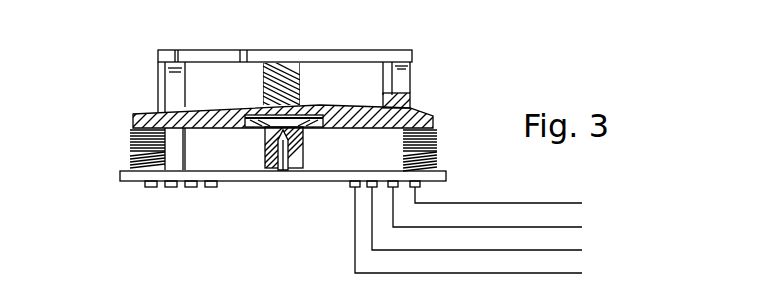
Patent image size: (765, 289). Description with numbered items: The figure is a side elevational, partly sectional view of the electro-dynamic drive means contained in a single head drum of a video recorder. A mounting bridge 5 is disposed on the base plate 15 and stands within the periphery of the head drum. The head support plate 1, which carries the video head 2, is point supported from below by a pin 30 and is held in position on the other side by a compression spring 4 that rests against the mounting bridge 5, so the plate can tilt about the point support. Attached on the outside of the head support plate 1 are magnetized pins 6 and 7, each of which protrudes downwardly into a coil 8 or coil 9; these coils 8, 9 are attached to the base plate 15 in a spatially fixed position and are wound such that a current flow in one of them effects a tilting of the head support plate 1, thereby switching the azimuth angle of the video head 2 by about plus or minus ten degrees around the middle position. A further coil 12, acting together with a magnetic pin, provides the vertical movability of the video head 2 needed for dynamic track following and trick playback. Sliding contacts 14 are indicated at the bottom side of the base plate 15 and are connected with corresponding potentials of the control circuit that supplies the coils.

The head support plate 1 is at (423, 117).
The video head 2 is at (268, 128).
The compression spring 4 is at (297, 80).
The mounting bridge 5 is at (408, 58).
The magnetized pin 6 is at (132, 140).
The magnetized pin 7 is at (430, 135).
The coil 8 is at (132, 162).
The coil 9 is at (437, 162).
The coil 12 is at (265, 162).
The sliding contacts 14 is at (353, 185).
The base plate 15 is at (122, 175).
The pin 30 is at (285, 172).